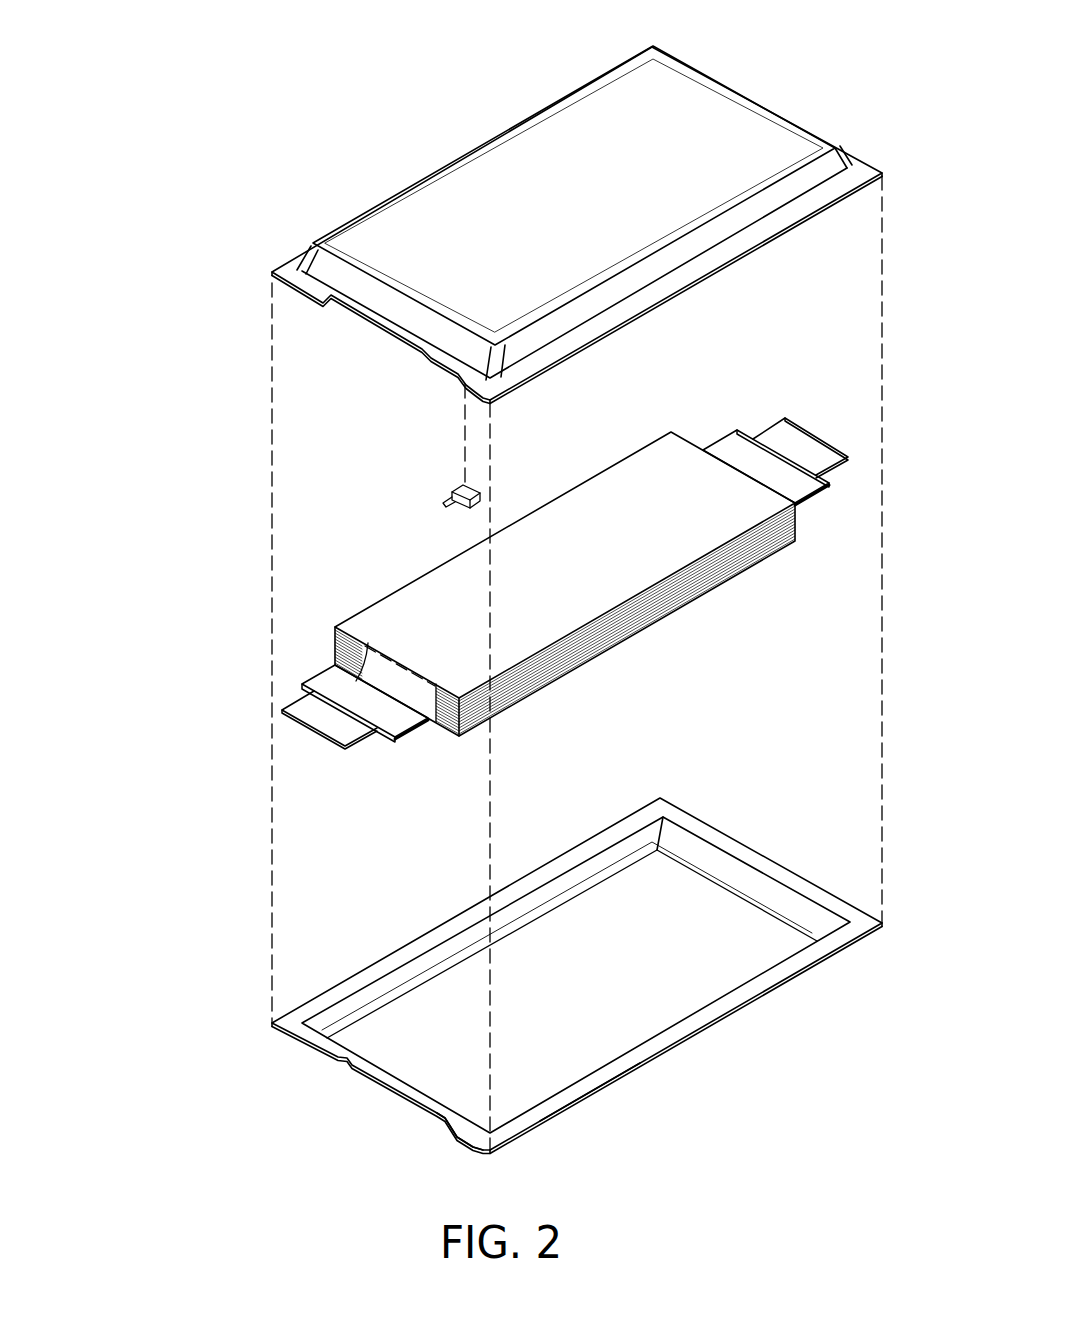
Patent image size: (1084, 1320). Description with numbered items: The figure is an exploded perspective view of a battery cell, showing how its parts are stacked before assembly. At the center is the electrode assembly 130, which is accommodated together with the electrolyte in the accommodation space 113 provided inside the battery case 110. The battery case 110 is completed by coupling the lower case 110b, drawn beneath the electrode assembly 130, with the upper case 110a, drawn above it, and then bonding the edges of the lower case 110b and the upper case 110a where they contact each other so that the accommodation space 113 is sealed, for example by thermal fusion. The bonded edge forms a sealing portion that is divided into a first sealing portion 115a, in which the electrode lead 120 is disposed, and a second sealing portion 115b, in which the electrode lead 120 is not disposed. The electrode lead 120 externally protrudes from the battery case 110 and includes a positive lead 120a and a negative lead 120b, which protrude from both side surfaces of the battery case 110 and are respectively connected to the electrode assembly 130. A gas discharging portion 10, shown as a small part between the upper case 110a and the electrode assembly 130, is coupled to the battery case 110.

The gas discharging portion 10 is at (418, 517).
The battery case 110 is at (137, 441).
The upper case 110a is at (303, 282).
The lower case 110b is at (513, 942).
The accommodation space 113 is at (424, 1050).
The first sealing portion 115a is at (443, 1128).
The second sealing portion 115b is at (598, 1082).
The electrode lead 120 is at (599, 754).
The positive lead 120a is at (347, 727).
The negative lead 120b is at (823, 460).
The electrode assembly 130 is at (632, 453).